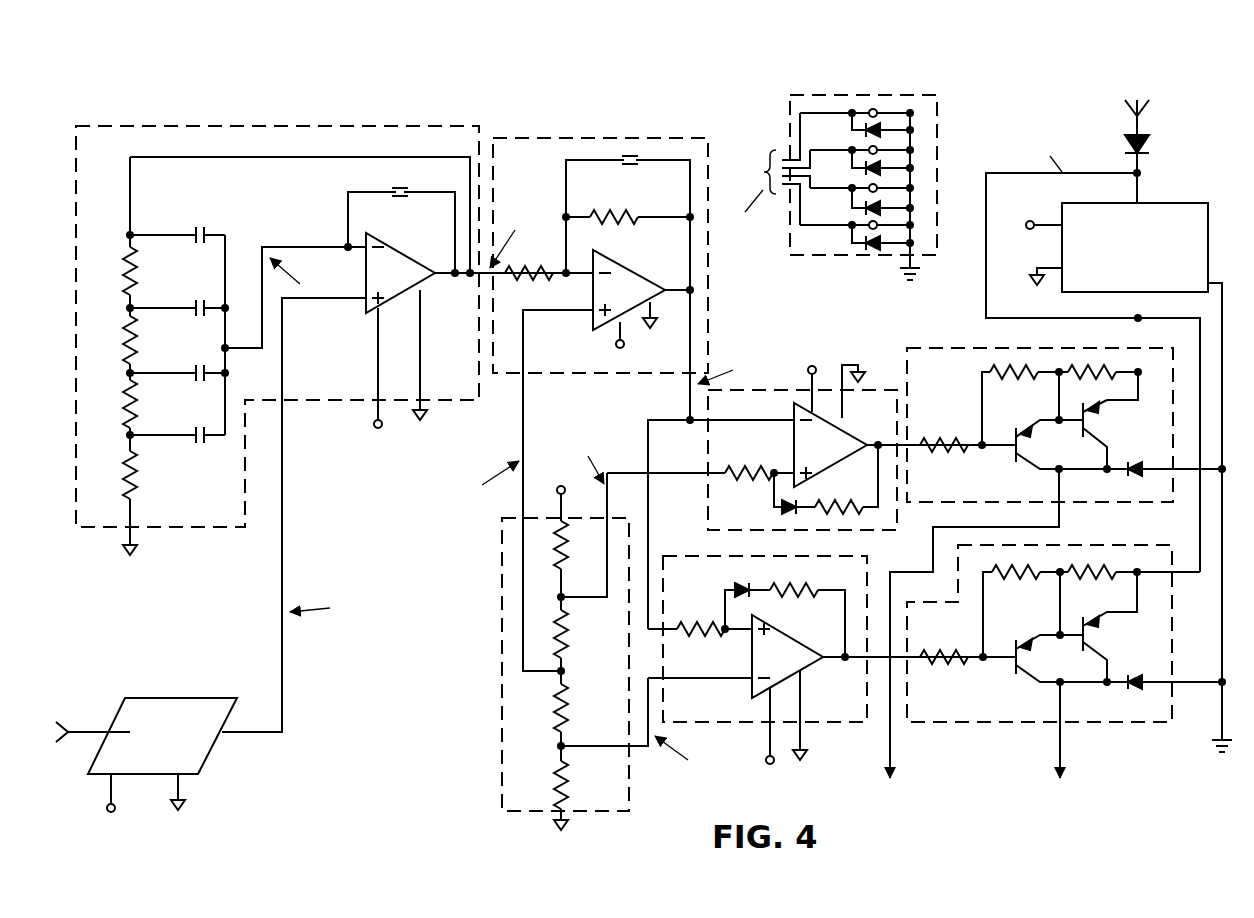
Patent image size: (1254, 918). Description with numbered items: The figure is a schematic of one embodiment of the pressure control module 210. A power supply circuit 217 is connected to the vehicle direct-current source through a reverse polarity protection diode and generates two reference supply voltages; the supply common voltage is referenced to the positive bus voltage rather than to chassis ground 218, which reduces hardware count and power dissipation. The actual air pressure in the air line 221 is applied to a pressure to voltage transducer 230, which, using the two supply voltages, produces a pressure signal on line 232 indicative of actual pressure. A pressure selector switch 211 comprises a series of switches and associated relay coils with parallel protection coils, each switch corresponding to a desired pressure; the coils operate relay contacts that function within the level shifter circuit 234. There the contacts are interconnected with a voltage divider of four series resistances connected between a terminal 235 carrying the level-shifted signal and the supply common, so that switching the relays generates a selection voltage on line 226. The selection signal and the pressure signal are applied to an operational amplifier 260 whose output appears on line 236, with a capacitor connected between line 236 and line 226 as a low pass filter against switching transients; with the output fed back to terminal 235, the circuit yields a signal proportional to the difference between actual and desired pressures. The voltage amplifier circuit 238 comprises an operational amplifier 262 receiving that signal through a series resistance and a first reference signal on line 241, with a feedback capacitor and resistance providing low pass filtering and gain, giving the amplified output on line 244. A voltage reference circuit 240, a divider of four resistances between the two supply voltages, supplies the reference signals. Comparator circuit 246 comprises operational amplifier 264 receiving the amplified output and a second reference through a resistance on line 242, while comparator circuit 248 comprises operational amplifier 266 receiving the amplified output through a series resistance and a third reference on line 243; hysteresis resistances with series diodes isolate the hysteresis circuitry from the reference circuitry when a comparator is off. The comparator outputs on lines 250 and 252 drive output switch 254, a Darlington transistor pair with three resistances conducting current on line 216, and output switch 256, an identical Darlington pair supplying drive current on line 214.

The pressure control module 210 is at (355, 779).
The pressure selector switch 211 is at (940, 133).
The line 214 is at (1065, 760).
The line 216 is at (895, 765).
The power supply circuit 217 is at (1201, 203).
The chassis ground 218 is at (903, 266).
The air line 221 is at (97, 731).
The line 226 is at (296, 244).
The pressure to voltage transducer 230 is at (184, 697).
The line 232 is at (289, 556).
The level shifter circuit 234 is at (228, 528).
The terminal 235 is at (140, 231).
The line 236 is at (487, 270).
The voltage amplifier circuit 238 is at (583, 138).
The voltage reference circuit 240 is at (500, 570).
The line 241 is at (525, 433).
The line 242 is at (612, 470).
The line 243 is at (651, 762).
The line 244 is at (697, 384).
The comparator circuit 246 is at (874, 388).
The comparator circuit 248 is at (855, 735).
The line 250 is at (906, 450).
The line 252 is at (875, 652).
The output switch 254 is at (976, 346).
The output switch 256 is at (990, 723).
The operational amplifier 260 is at (405, 256).
The operational amplifier 262 is at (637, 287).
The operational amplifier 264 is at (848, 440).
The operational amplifier 266 is at (803, 640).